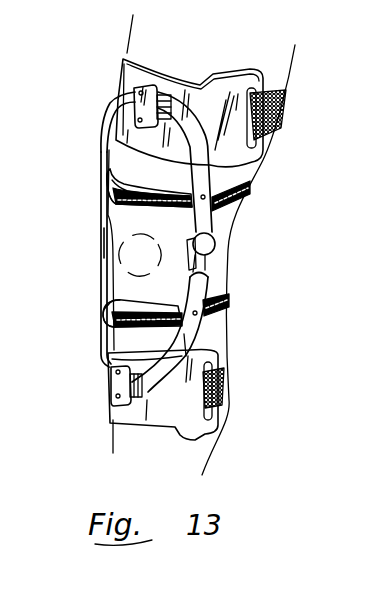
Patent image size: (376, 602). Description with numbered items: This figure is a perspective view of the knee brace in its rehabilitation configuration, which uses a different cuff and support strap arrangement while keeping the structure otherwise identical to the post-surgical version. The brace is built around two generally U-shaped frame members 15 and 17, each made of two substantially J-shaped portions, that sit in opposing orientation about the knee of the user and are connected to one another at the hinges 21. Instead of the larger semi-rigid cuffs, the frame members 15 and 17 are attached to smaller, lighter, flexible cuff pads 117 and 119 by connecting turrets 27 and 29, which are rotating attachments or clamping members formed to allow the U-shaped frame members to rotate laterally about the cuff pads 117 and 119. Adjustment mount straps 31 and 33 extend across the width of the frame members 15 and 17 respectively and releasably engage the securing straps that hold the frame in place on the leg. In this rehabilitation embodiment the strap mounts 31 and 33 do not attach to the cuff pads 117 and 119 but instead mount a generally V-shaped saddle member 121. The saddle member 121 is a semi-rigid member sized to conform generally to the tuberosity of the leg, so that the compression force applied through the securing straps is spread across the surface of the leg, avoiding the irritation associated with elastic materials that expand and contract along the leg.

The frame member 15 is at (117, 103).
The frame member 17 is at (210, 292).
The hinge 21 is at (216, 246).
The turret 27 is at (148, 90).
The turret 29 is at (108, 390).
The adjustment mount strap 31 is at (226, 200).
The adjustment mount strap 33 is at (220, 320).
The cuff pad 117 is at (224, 92).
The cuff pad 119 is at (212, 440).
The saddle member 121 is at (118, 173).